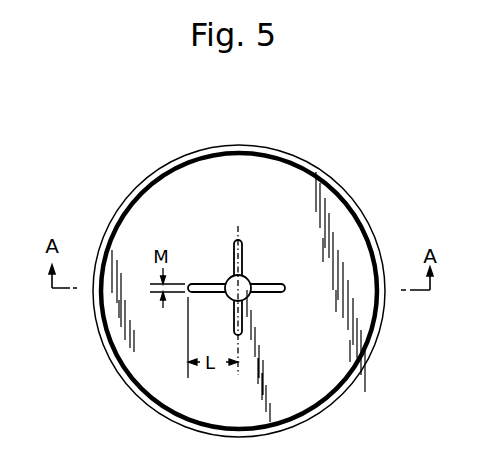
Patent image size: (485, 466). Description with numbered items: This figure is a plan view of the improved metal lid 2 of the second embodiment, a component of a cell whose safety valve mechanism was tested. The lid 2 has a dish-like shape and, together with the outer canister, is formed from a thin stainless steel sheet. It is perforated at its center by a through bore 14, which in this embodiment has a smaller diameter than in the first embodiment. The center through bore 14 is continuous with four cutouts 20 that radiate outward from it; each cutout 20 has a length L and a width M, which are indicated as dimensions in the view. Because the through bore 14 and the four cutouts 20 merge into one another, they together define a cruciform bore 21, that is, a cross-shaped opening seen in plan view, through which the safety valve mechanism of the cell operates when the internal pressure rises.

The metal lid 2 is at (309, 153).
The center through bore 14 is at (248, 263).
The cutouts 20 is at (244, 244).
The cruciform bore 21 is at (222, 230).